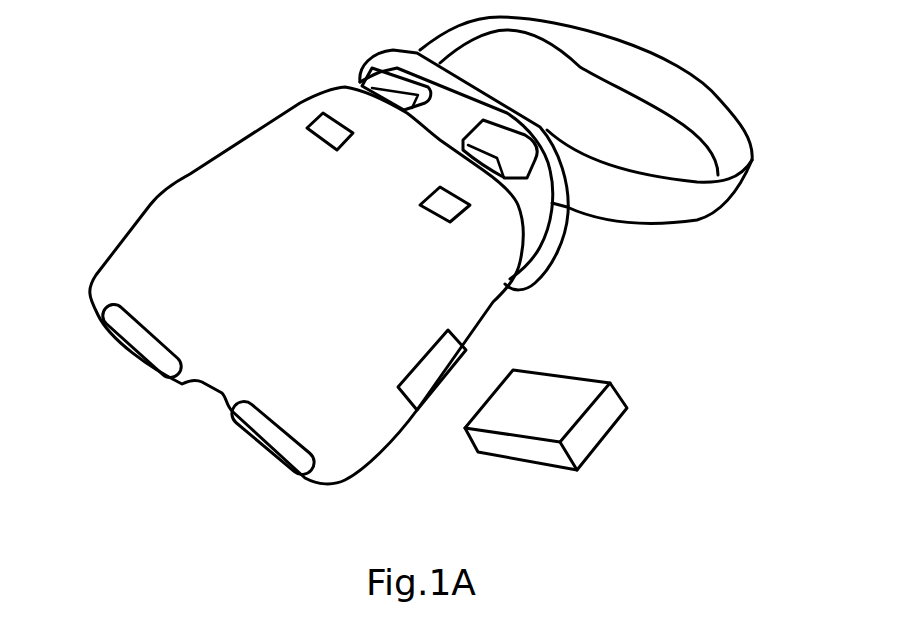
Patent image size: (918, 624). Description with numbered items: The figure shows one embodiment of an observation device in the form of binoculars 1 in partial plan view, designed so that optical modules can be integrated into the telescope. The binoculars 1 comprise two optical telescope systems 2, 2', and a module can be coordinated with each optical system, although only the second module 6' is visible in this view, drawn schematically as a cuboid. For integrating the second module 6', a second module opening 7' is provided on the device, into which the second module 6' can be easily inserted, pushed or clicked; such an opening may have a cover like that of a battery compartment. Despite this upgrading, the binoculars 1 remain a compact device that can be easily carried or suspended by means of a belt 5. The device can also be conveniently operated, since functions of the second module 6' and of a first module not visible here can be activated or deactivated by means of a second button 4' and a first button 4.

The binoculars 1 is at (147, 147).
The optical telescope system 2 is at (113, 387).
The optical telescope system 2' is at (249, 491).
The first button 4 is at (283, 87).
The second button 4' is at (511, 264).
The belt 5 is at (643, 65).
The second module 6' is at (612, 448).
The second module opening 7' is at (432, 419).